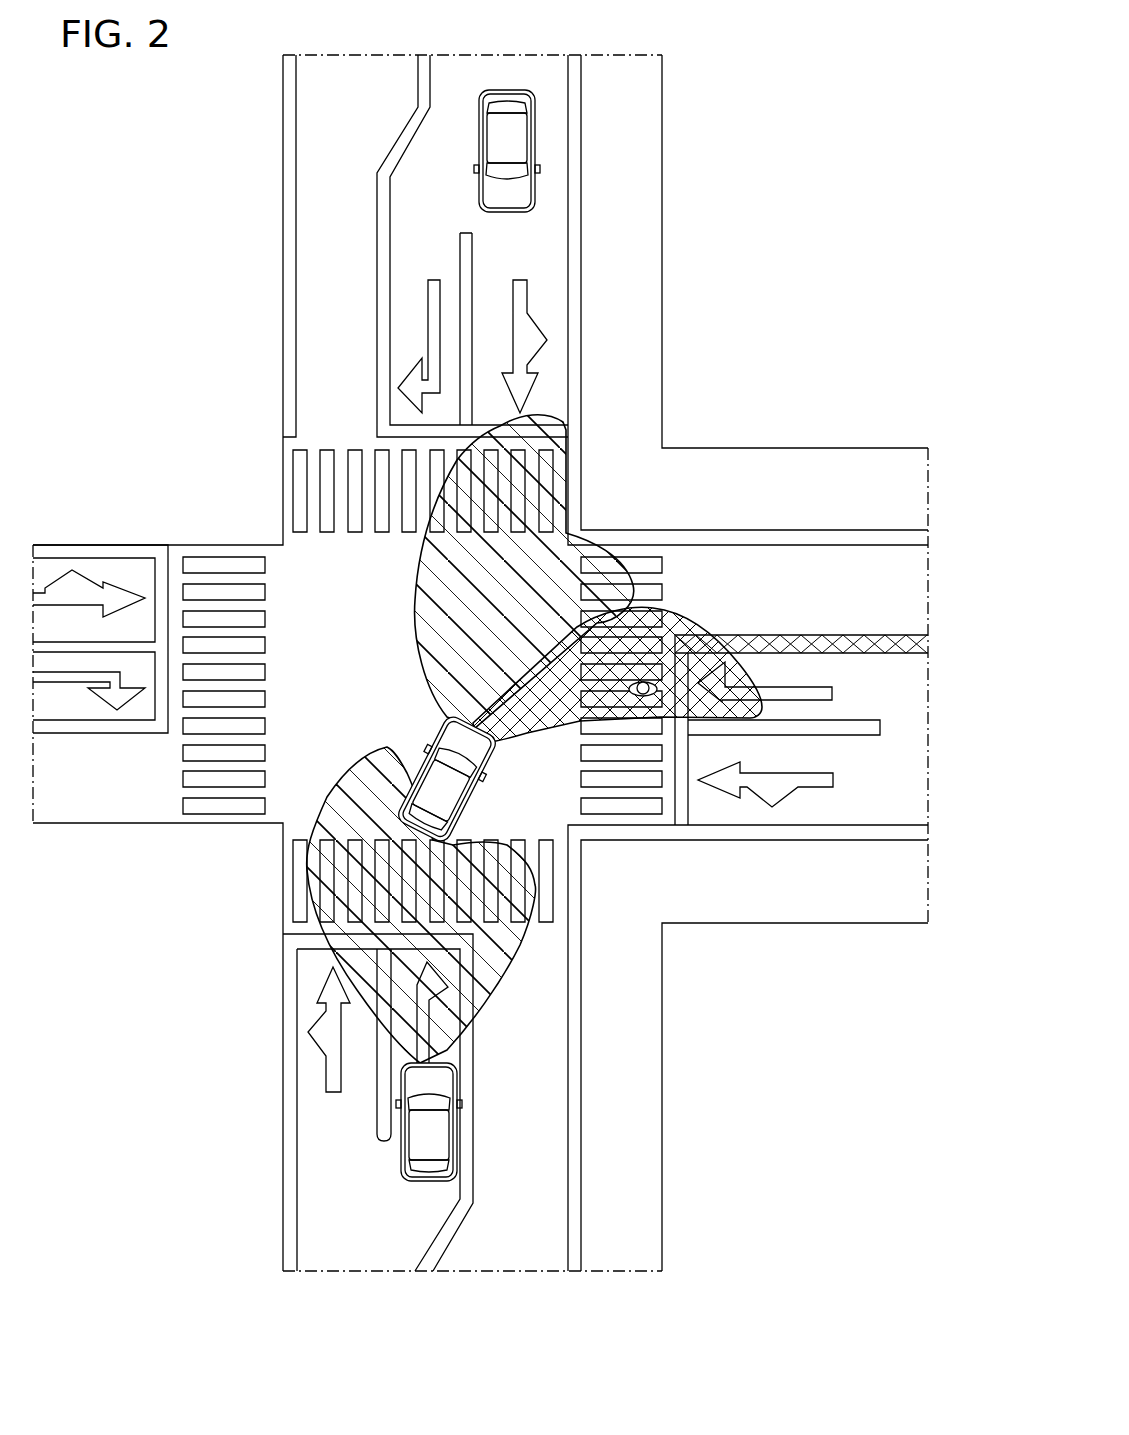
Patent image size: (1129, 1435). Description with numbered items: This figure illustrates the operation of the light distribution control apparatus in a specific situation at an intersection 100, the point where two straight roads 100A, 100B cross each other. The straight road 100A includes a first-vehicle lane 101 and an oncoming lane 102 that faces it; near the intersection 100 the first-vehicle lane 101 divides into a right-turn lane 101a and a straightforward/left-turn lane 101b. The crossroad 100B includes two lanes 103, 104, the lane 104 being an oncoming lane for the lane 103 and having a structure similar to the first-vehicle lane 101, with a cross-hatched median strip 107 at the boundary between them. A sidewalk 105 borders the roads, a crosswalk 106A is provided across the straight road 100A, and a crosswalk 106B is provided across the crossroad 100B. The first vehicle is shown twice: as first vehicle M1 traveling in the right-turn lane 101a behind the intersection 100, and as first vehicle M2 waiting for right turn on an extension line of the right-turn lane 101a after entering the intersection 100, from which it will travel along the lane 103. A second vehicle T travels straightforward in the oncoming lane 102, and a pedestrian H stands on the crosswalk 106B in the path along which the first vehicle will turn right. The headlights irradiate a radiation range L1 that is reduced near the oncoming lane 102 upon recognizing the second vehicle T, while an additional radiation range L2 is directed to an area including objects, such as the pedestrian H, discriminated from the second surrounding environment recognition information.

The intersection 100 is at (300, 578).
The straight road 100A is at (538, 1338).
The crossroad 100B is at (898, 417).
The first-vehicle lane 101 is at (451, 1298).
The right-turn lane 101a is at (426, 1186).
The straightforward/left-turn lane 101b is at (346, 1145).
The oncoming lane 102 is at (513, 70).
The lane 103 is at (800, 600).
The lane 104 is at (892, 700).
The sidewalk 105 is at (651, 263).
The crosswalk 106A is at (547, 899).
The crosswalk 106B is at (638, 806).
The median strip 107 is at (767, 640).
The second vehicle T is at (515, 135).
The first vehicle M1 is at (435, 1134).
The first vehicle M2 is at (442, 782).
The radiation range L1 is at (415, 570).
The additional radiation range L2 is at (703, 612).
The pedestrian H is at (647, 694).